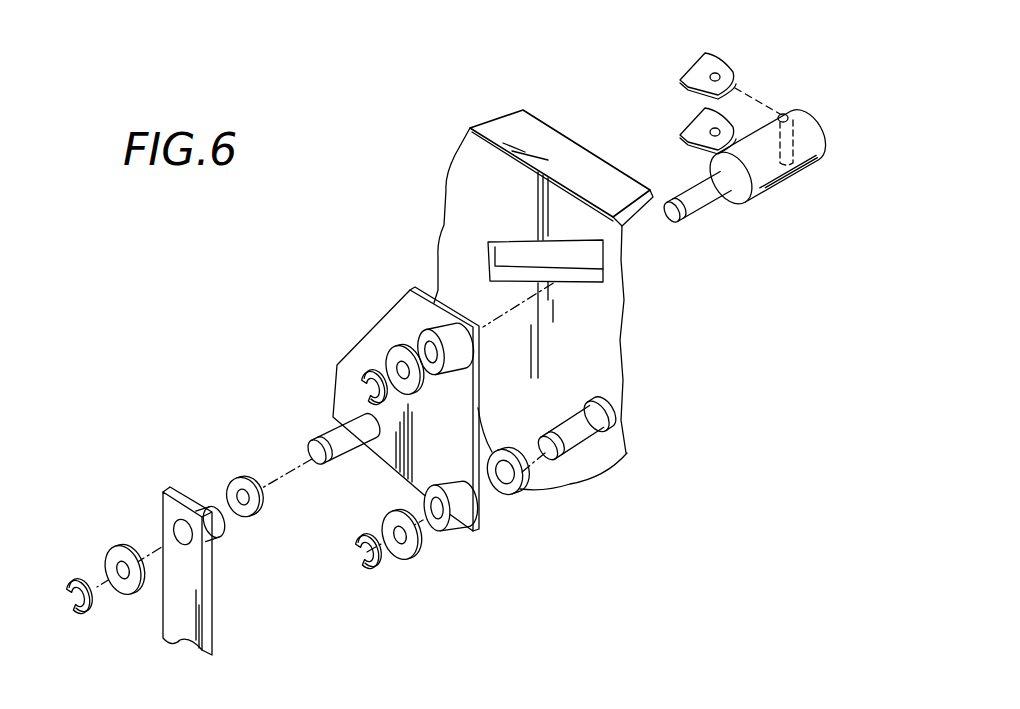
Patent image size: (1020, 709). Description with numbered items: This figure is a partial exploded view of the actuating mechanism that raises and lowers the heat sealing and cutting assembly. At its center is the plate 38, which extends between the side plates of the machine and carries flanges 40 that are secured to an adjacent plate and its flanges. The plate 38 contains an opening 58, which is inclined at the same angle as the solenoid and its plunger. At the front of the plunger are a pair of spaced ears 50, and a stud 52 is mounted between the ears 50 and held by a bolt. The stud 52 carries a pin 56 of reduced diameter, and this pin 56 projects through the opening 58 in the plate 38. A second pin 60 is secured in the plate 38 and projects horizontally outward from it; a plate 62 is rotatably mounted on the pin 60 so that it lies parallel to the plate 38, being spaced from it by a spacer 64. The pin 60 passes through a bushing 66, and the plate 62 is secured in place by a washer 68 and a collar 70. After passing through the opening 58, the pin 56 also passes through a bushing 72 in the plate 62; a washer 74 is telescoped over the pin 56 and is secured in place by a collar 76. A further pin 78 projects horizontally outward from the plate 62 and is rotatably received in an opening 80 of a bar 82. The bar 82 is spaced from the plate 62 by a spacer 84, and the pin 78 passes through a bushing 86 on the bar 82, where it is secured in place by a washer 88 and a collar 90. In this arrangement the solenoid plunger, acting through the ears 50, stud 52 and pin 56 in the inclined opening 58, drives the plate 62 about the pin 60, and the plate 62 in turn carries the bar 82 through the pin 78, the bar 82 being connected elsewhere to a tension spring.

The plate 38 is at (578, 361).
The flanges 40 is at (563, 145).
The ears 50 is at (688, 130).
The stud 52 is at (780, 182).
The pin 56 is at (707, 208).
The opening 58 is at (508, 246).
The pin 60 is at (565, 432).
The plate 62 is at (454, 467).
The spacer 64 is at (518, 494).
The bushing 66 is at (447, 537).
The washer 68 is at (403, 558).
The collar 70 is at (373, 576).
The bushing 72 is at (428, 335).
The washer 74 is at (415, 392).
The collar 76 is at (357, 388).
The pin 78 is at (310, 438).
The opening 80 is at (175, 523).
The bar 82 is at (212, 625).
The spacer 84 is at (260, 507).
The bushing 86 is at (220, 538).
The washer 88 is at (117, 550).
The collar 90 is at (73, 577).